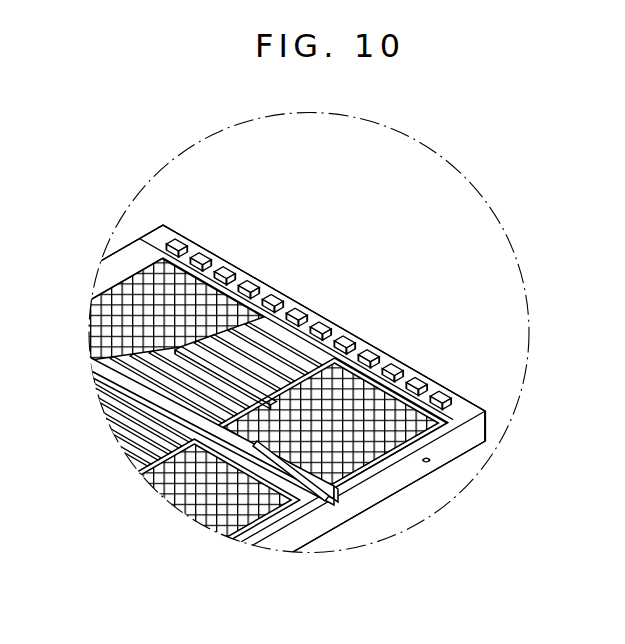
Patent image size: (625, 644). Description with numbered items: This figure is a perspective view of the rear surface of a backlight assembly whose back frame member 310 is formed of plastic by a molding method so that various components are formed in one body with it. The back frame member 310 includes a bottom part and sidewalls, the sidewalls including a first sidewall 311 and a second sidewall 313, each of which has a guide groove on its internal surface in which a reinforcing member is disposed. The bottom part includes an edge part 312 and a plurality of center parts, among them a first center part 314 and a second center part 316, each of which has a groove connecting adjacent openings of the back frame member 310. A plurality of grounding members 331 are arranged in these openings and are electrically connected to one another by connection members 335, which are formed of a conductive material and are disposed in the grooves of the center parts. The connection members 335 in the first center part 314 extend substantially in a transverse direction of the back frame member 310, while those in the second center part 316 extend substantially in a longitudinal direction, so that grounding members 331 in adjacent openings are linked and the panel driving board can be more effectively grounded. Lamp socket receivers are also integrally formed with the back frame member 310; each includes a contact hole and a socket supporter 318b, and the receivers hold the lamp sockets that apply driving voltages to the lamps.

The back frame member 310 is at (490, 428).
The first sidewall 311 is at (135, 243).
The edge part 312 is at (205, 290).
The second sidewall 313 is at (390, 485).
The first center part 314 is at (183, 457).
The second center part 316 is at (283, 295).
The socket supporter 318b is at (378, 364).
The grounding member 331 is at (392, 398).
The connection member 335 is at (308, 497).